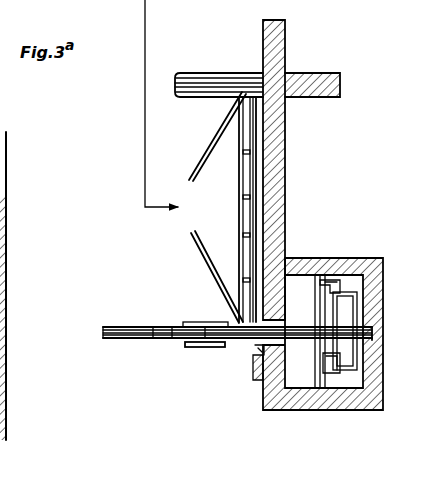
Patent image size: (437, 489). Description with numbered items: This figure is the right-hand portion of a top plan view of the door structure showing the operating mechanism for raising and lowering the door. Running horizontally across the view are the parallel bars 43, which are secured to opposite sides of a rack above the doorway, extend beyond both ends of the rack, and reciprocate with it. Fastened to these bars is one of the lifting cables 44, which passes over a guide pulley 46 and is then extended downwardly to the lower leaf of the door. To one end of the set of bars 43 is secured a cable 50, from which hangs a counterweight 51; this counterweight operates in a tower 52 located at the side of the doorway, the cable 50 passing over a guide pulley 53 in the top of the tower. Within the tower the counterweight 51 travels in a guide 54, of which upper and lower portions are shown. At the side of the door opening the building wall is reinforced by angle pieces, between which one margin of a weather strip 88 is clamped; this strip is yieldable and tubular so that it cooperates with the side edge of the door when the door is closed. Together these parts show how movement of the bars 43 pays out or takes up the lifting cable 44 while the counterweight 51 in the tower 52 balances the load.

The parallel bars 43 is at (120, 340).
The lifting cables 44 is at (214, 348).
The guide pulleys 46 is at (221, 322).
The cable 50 is at (177, 342).
The counterweights 51 is at (346, 357).
The towers 52 is at (265, 386).
The guide pulleys 53 is at (355, 314).
The guides 54 is at (343, 276).
The weather strip 88 is at (258, 349).